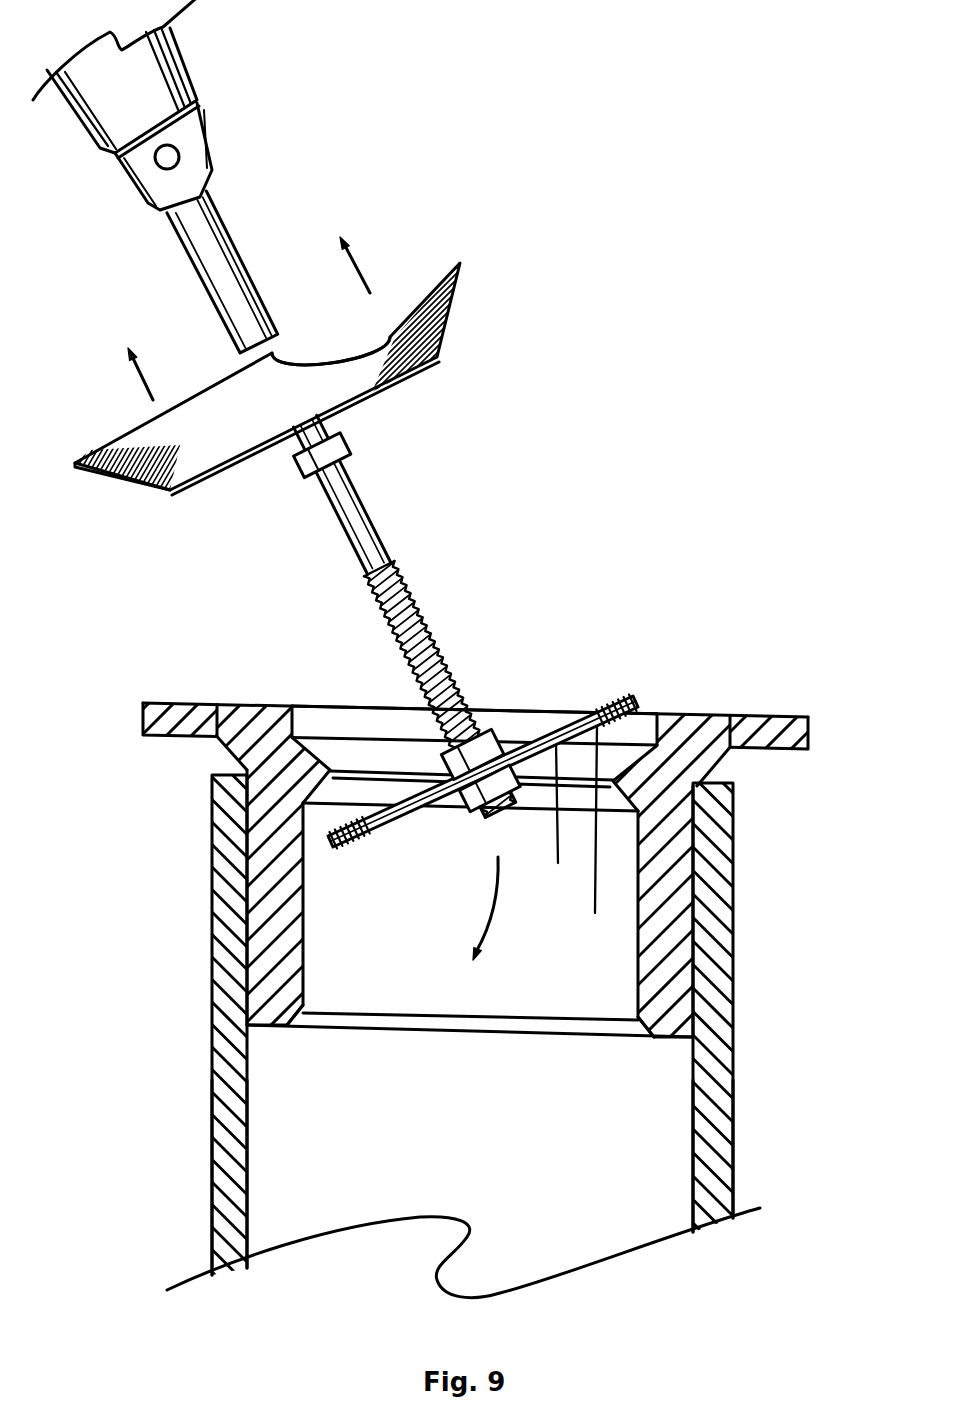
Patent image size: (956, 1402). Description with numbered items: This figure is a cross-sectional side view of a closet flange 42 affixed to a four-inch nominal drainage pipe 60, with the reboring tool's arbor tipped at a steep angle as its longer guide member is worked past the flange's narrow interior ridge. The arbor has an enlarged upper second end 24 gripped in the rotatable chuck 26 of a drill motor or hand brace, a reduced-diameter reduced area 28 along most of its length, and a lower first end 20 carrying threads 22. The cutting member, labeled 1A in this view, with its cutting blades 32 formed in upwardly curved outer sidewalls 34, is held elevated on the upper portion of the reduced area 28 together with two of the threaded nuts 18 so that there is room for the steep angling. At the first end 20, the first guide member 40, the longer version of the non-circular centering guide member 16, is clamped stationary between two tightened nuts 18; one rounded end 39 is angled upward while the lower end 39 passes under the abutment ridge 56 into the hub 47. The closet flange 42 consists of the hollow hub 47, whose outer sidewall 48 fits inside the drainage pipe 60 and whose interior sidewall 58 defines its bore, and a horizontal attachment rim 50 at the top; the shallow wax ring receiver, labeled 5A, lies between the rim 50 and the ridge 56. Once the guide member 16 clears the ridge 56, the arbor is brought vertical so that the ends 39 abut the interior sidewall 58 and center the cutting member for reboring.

The rotatable chuck 26 is at (170, 43).
The second end 24 is at (231, 233).
The wrench plate 1A is at (465, 254).
The cutting blades 32 is at (367, 318).
The outer sidewalls 34 is at (195, 425).
The threaded nuts 18 is at (343, 439).
The reduced area 28 is at (361, 502).
The threads 22 is at (458, 687).
The centering guide member 16 is at (605, 694).
The rounded ends 39 is at (632, 692).
The first end 20 is at (488, 720).
The attachment rim 50 is at (175, 703).
The top plate 5A is at (321, 721).
The closet flange 42 is at (773, 715).
The hub 47 is at (690, 823).
The outer sidewall 48 is at (240, 887).
The first guide member 40 is at (564, 825).
The abutment ridge 56 is at (604, 841).
The interior sidewall 58 is at (300, 967).
The drainage pipe 60 is at (210, 1140).